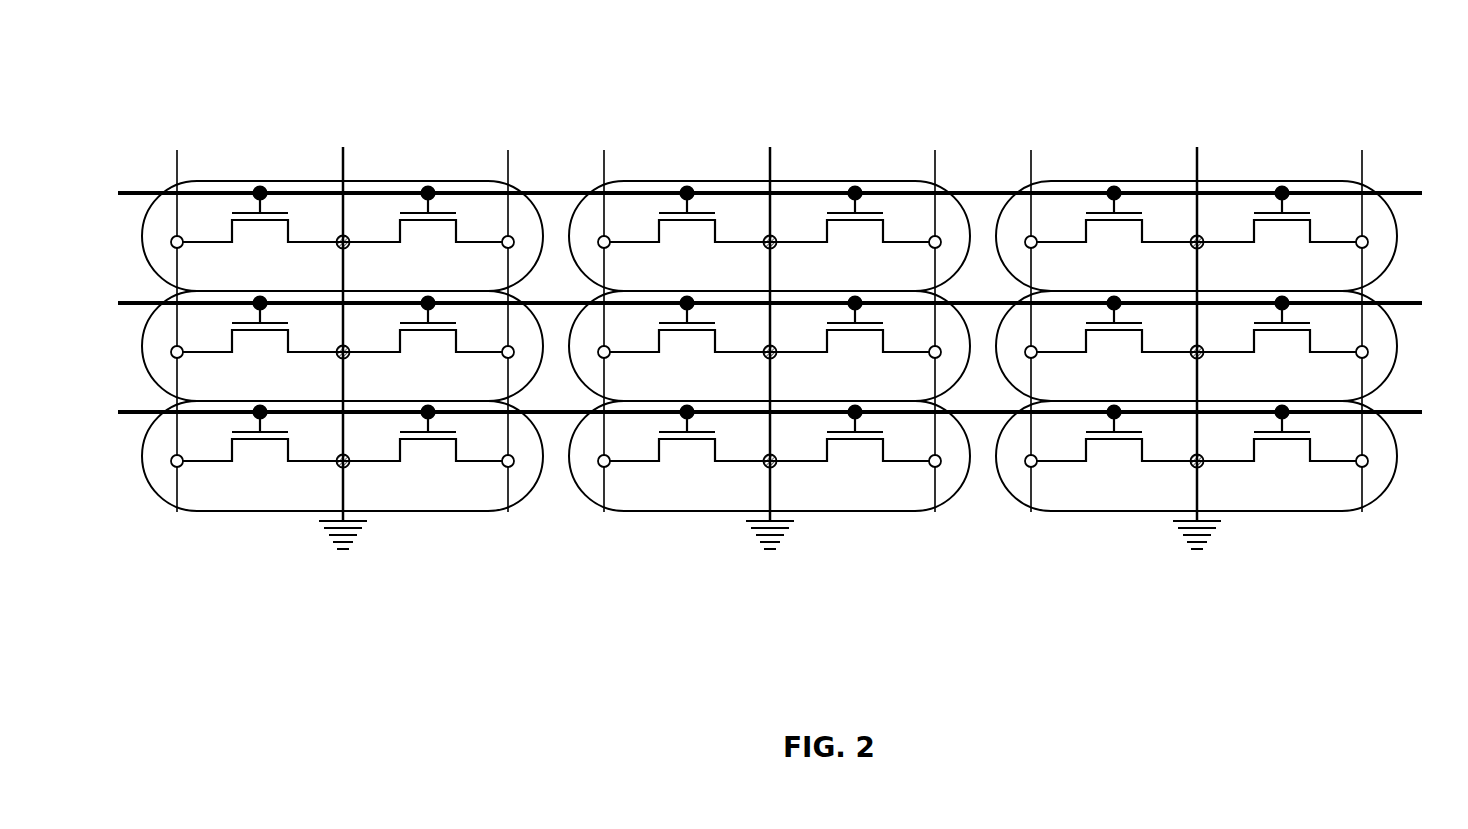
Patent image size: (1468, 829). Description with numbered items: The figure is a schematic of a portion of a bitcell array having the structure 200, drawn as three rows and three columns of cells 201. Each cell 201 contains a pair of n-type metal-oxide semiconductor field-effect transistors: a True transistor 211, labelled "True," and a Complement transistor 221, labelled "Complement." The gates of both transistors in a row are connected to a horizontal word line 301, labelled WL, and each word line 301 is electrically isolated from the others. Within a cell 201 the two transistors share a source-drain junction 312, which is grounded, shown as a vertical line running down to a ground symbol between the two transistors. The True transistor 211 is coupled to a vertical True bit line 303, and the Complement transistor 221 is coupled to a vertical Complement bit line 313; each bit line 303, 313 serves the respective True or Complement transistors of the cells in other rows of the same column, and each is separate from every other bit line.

The structure 200 is at (188, 61).
The cell 201 is at (143, 214).
The True transistor 211 is at (232, 238).
The Complement transistor 221 is at (398, 236).
The word line 301 is at (1425, 357).
The True bit line 303 is at (176, 487).
The source-drain junction 312 is at (338, 347).
The Complement bit line 313 is at (508, 497).